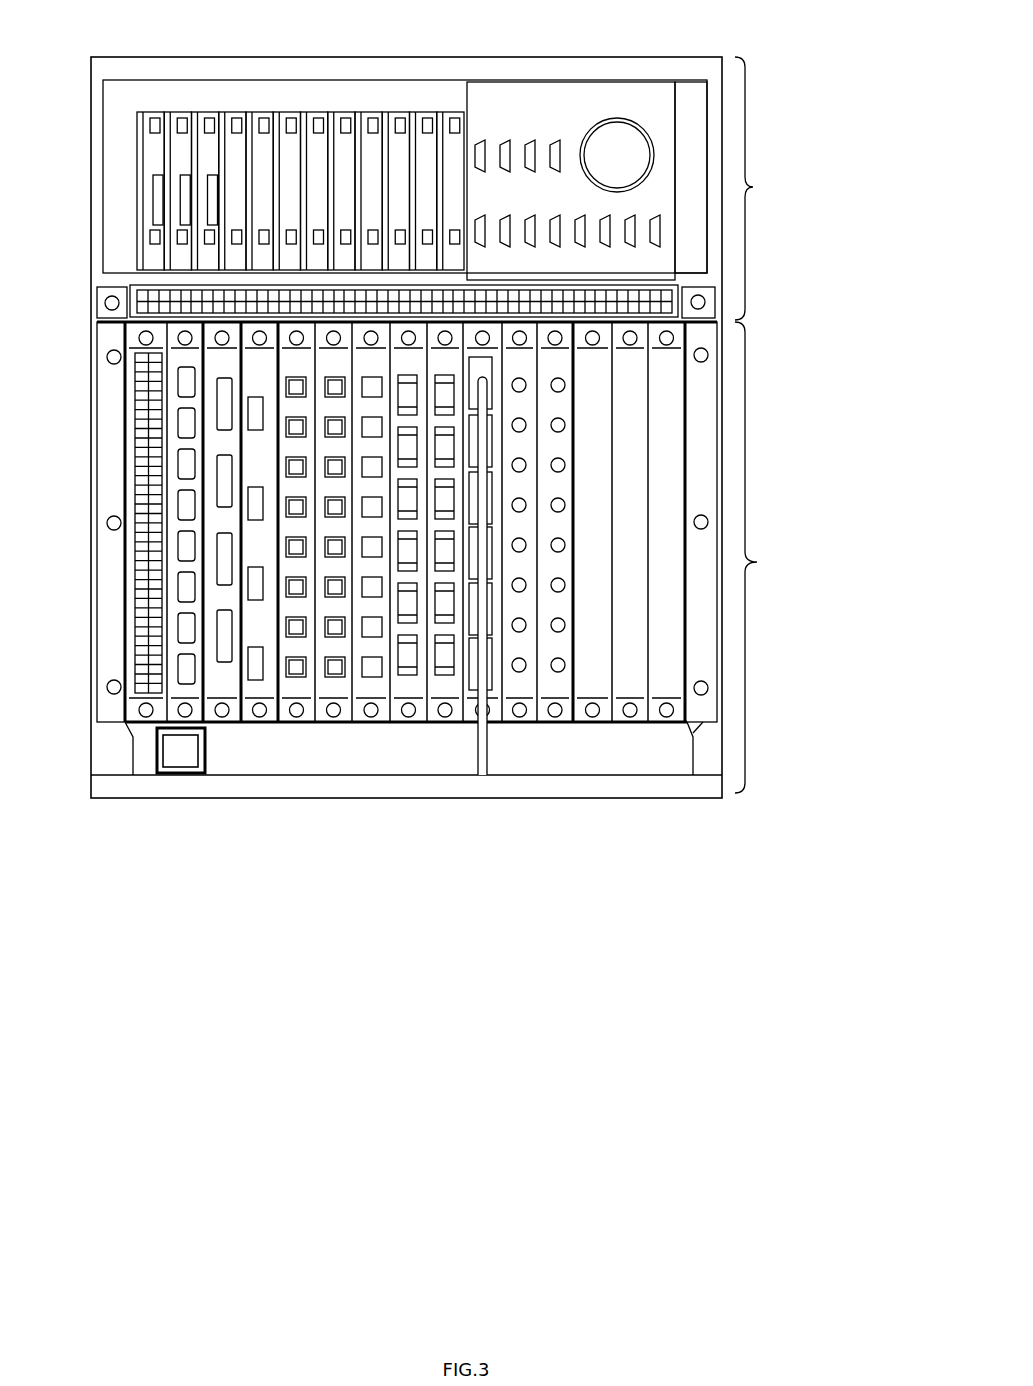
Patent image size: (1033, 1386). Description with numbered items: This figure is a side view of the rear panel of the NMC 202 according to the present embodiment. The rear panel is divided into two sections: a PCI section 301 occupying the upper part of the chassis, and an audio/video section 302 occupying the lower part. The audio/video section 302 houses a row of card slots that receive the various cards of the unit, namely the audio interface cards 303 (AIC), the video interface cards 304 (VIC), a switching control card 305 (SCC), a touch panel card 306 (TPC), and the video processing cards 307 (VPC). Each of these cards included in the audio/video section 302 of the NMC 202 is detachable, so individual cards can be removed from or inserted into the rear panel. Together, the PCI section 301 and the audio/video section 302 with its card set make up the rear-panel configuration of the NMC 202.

The NMC 202 is at (400, 57).
The PCI section 301 is at (90, 170).
The audio/video section 302 is at (90, 520).
The audio interface cards 303 is at (146, 733).
The video interface cards 304 is at (451, 735).
The switching control card 305 is at (224, 736).
The touch panel card 306 is at (268, 736).
The video processing cards 307 is at (638, 735).